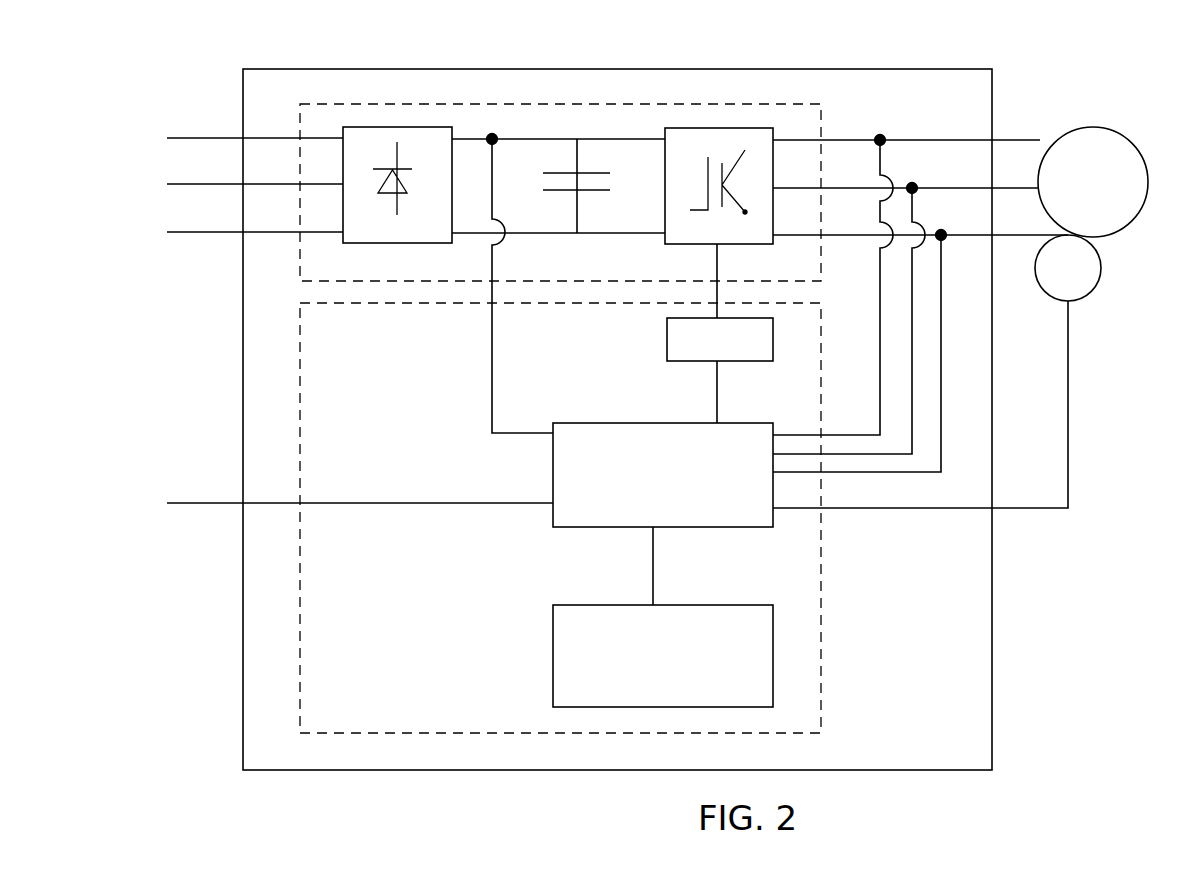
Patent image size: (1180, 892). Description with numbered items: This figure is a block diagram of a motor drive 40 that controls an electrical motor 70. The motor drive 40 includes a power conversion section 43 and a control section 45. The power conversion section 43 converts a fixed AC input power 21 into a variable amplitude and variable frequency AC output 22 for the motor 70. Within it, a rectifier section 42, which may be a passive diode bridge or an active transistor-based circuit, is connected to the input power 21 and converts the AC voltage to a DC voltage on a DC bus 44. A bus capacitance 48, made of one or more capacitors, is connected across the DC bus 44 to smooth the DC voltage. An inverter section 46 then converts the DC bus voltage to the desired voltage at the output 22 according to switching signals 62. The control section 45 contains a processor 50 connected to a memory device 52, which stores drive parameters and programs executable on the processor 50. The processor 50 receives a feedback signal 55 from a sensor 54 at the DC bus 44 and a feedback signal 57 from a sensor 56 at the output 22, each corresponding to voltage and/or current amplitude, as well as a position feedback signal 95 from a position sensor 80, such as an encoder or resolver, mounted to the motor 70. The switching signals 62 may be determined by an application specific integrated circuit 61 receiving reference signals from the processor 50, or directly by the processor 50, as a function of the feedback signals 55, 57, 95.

The input power 21 is at (230, 128).
The output 22 is at (1005, 133).
The motor drive 40 is at (818, 69).
The rectifier section 42 is at (408, 243).
The power conversion section 43 is at (357, 103).
The DC bus 44 is at (647, 128).
The control section 45 is at (300, 380).
The inverter section 46 is at (665, 213).
The bus capacitance 48 is at (556, 205).
The processor 50 is at (623, 423).
The memory device 52 is at (553, 655).
The sensor 54 is at (491, 134).
The feedback signal 55 is at (492, 393).
The sensor 56 is at (943, 232).
The feedback signal 57 is at (880, 428).
The application specific integrated circuit 61 is at (667, 348).
The switching signals 62 is at (718, 306).
The motor 70 is at (1130, 150).
The position sensor 80 is at (1045, 289).
The position feedback signal 95 is at (1070, 433).